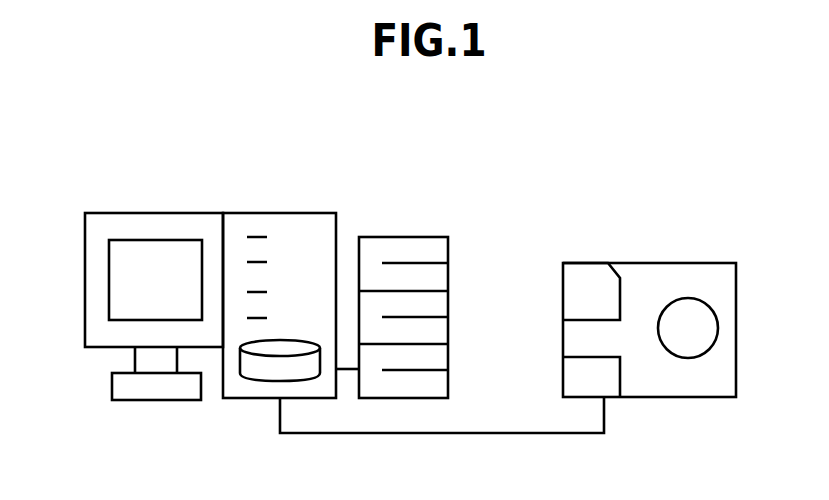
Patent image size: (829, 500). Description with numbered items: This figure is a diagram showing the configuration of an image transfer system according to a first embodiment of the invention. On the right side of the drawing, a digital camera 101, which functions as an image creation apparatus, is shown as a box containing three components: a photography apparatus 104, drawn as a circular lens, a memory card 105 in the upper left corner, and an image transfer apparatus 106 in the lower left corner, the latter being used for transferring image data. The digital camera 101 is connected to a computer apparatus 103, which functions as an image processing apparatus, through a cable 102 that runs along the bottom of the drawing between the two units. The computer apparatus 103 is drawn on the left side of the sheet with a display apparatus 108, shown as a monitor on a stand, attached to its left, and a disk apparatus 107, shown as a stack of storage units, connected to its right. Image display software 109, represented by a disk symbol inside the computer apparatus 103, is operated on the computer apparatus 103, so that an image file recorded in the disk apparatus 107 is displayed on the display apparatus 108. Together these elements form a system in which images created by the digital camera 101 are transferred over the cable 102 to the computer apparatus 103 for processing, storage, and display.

The digital camera 101 is at (682, 275).
The cable 102 is at (453, 436).
The computer apparatus 103 is at (282, 212).
The photography apparatus 104 is at (705, 328).
The memory card 105 is at (588, 277).
The image transfer apparatus 106 is at (572, 380).
The disk apparatus 107 is at (405, 235).
The display apparatus 108 is at (152, 212).
The image display software 109 is at (297, 345).